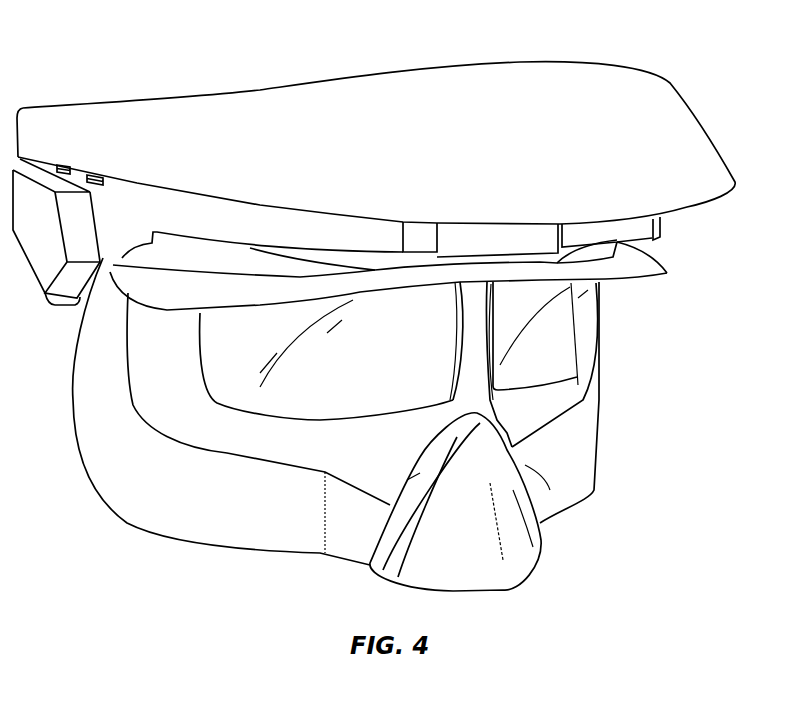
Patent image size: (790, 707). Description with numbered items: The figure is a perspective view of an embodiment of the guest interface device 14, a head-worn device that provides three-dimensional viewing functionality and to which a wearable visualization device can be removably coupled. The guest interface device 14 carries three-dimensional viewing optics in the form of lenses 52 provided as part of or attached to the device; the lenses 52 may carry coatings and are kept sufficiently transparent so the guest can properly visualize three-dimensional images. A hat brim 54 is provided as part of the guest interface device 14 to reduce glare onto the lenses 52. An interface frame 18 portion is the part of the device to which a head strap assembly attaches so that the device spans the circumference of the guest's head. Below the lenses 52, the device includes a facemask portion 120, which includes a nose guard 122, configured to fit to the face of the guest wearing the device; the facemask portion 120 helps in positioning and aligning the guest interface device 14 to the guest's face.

The guest interface device 14 is at (700, 33).
The hat brim 54 is at (710, 138).
The interface frame 18 is at (117, 247).
The facemask portion 120 is at (384, 411).
The lenses 52 is at (353, 418).
The nose guard 122 is at (512, 518).